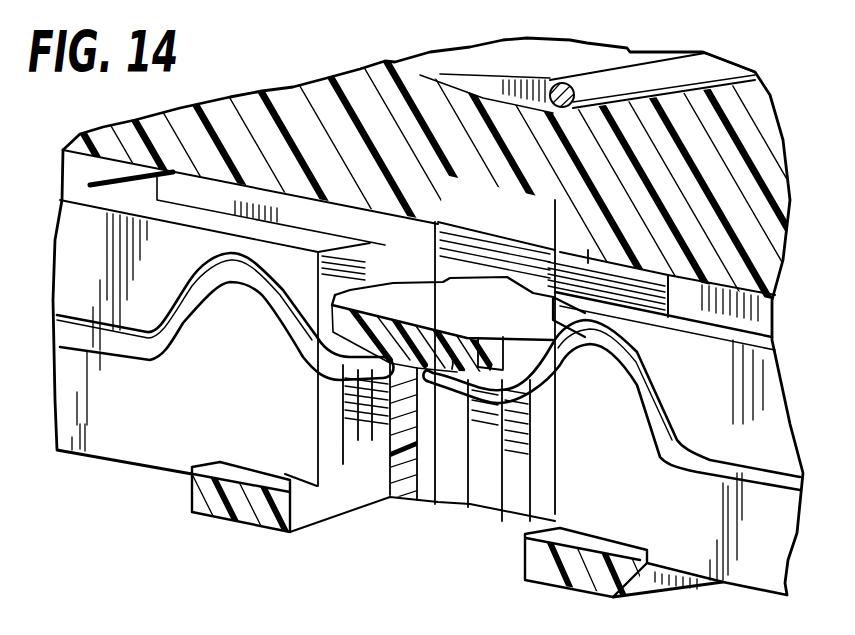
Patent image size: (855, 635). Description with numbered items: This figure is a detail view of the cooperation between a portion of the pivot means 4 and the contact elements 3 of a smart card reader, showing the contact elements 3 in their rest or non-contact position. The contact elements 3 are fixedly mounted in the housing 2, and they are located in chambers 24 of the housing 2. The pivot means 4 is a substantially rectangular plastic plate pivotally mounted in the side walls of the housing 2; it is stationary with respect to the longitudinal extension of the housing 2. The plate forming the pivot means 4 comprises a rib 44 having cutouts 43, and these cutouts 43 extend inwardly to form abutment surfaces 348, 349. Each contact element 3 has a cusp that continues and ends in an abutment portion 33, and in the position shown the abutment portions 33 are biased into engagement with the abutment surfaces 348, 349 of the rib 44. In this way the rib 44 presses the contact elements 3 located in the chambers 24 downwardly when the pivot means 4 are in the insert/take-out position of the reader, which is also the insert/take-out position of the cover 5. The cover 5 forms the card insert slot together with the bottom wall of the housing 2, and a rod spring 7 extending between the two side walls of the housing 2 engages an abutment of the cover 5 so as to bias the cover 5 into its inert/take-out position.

The housing 2 is at (156, 462).
The contact elements 3 is at (121, 348).
The pivot means 4 is at (600, 276).
The cover 5 is at (760, 126).
The rod spring 7 is at (657, 76).
The chambers 24 is at (755, 303).
The abutment portion 33 is at (352, 366).
The cutouts 43 is at (468, 280).
The rib 44 is at (538, 295).
The abutment surface 348 is at (505, 360).
The abutment surface 349 is at (458, 327).